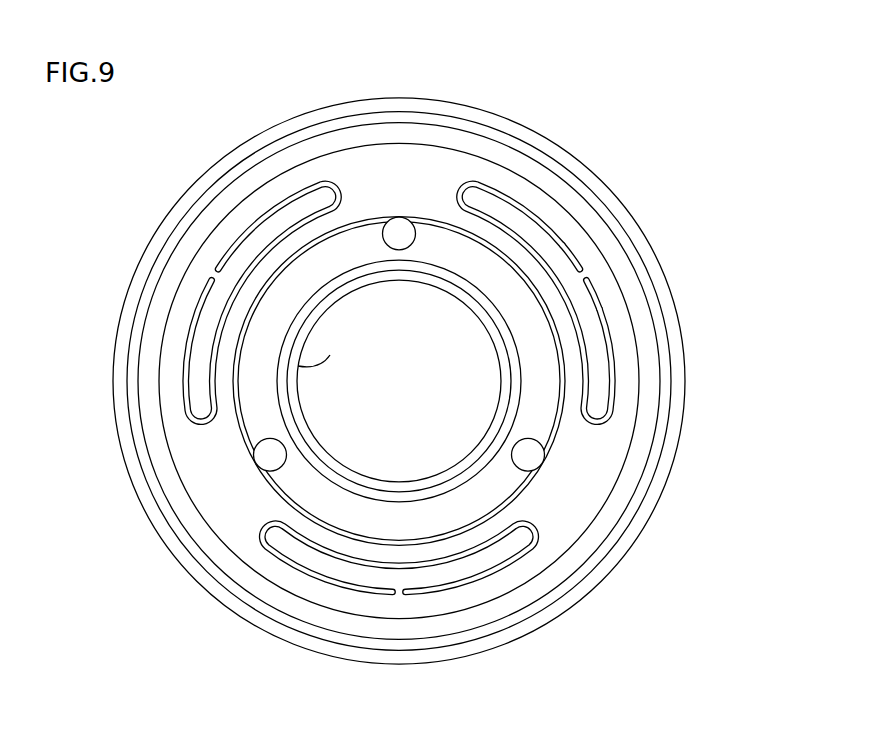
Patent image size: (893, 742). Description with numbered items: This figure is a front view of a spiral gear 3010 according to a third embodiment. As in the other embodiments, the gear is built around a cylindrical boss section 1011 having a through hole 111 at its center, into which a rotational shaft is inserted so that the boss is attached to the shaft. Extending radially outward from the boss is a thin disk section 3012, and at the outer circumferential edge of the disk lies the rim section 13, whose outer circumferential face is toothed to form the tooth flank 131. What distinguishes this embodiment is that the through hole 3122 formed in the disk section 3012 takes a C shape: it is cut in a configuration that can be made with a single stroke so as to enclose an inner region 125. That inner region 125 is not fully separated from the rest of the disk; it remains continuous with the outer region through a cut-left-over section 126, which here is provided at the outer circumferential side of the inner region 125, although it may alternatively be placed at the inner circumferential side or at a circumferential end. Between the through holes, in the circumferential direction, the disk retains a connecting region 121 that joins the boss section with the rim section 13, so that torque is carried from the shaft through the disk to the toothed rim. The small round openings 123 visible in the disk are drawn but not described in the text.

The spiral gear 3010 is at (676, 105).
The through hole 3122 is at (535, 226).
The inner region 125 is at (558, 257).
The cut-left-over section 126 is at (583, 272).
The through hole 111 is at (330, 355).
The bolt hole 123 is at (261, 449).
The connecting region 121 is at (227, 491).
The tooth flank 131 is at (678, 447).
The rim section 13 is at (647, 477).
The disk section 3012 is at (592, 490).
The boss section 1011 is at (502, 480).